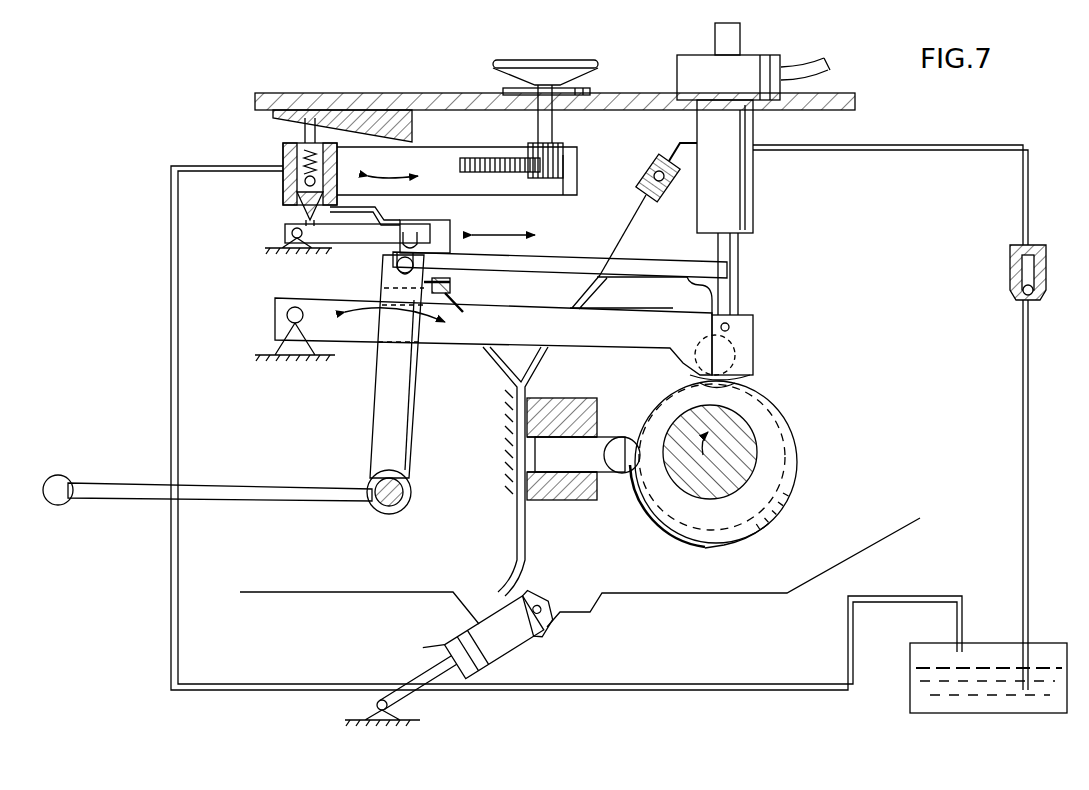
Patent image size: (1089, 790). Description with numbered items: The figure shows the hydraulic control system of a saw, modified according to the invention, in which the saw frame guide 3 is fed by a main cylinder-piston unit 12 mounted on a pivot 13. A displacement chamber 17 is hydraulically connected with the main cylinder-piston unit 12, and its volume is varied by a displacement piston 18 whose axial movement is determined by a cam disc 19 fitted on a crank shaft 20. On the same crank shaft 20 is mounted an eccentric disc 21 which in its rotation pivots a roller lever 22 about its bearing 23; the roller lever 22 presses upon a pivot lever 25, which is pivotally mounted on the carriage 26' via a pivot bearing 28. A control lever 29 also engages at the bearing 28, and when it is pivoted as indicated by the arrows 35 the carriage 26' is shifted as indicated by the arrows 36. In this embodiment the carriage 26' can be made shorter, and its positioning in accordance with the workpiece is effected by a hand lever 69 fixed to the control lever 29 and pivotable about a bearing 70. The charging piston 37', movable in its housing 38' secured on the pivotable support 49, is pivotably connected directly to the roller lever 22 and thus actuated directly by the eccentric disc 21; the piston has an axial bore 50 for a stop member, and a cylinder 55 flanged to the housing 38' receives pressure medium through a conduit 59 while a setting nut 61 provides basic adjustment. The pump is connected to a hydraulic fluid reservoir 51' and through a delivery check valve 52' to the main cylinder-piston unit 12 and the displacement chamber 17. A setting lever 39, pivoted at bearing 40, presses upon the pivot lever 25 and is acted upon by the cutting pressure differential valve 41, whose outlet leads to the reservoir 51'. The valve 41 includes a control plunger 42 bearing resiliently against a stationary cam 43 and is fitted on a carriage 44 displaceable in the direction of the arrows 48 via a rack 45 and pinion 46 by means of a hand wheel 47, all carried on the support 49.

The saw frame guide 3 is at (694, 588).
The main cylinder-piston unit 12 is at (520, 636).
The cylinder pivot 13 is at (377, 704).
The displacement chamber 17 is at (535, 452).
The displacement piston 18 is at (598, 470).
The cam disc 19 is at (785, 492).
The crank shaft 20 is at (760, 452).
The eccentric disc 21 is at (730, 384).
The roller lever 22 is at (753, 332).
The bearing 23 is at (288, 315).
The pivot lever 25 is at (586, 266).
The carriage 26' is at (462, 294).
The pivot bearing 28 is at (397, 268).
The control lever 29 is at (410, 385).
The arrows 35 is at (395, 320).
The arrows 36 is at (512, 234).
The charging piston 37' is at (759, 274).
The housing 38' is at (755, 166).
The setting lever 39 is at (300, 214).
The bearing 40 is at (292, 233).
The cutting pressure differential valve 41 is at (285, 186).
The control plunger 42 is at (302, 130).
The stationary cam 43 is at (380, 120).
The carriage 44 is at (566, 182).
The rack 45 is at (488, 158).
The pinion 46 is at (578, 160).
The hand wheel 47 is at (515, 72).
The arrows 48 is at (398, 178).
The support 49 is at (310, 100).
The axial bore 50 is at (1044, 282).
The hydraulic fluid reservoir 51' is at (961, 682).
The delivery check valve 52' is at (648, 200).
The cylinder 55 is at (688, 70).
The conduit 59 is at (822, 66).
The setting nut 61 is at (740, 32).
The hand lever 69 is at (146, 498).
The bearing 70 is at (400, 498).